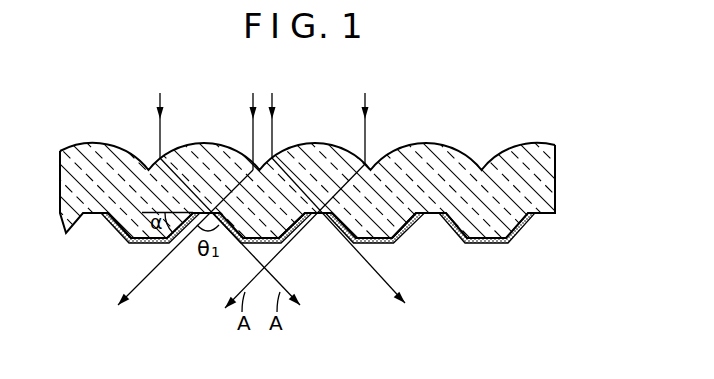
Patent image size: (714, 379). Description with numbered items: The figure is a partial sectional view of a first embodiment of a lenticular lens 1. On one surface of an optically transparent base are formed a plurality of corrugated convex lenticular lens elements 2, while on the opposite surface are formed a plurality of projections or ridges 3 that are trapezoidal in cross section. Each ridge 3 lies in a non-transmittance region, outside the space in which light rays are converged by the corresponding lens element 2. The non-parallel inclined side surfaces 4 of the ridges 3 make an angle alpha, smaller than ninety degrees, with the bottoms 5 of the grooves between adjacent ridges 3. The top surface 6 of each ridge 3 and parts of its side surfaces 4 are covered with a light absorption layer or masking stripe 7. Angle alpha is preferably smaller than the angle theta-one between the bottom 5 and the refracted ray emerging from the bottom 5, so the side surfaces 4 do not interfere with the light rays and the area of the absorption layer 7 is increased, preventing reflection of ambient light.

The lenticular lens 1 is at (560, 131).
The lenticular lens elements 2 is at (428, 143).
The projections or ridges 3 is at (111, 224).
The inclined side surfaces 4 is at (117, 212).
The bottoms of grooves 5 is at (317, 215).
The top surface 6 is at (131, 237).
The light absorption layer 7 is at (150, 238).